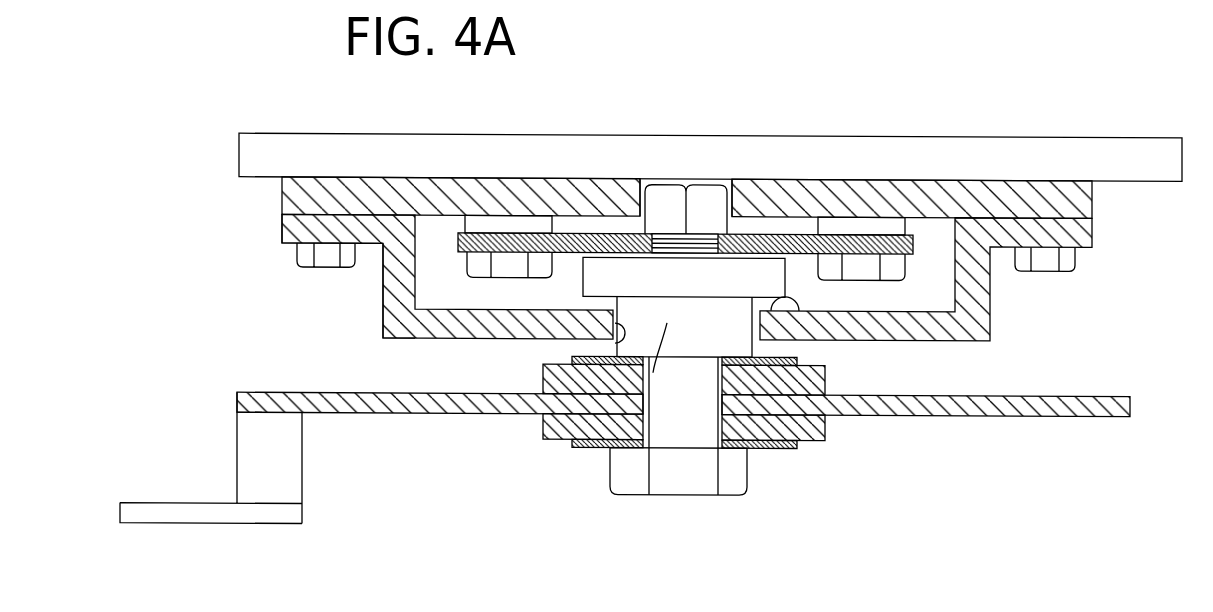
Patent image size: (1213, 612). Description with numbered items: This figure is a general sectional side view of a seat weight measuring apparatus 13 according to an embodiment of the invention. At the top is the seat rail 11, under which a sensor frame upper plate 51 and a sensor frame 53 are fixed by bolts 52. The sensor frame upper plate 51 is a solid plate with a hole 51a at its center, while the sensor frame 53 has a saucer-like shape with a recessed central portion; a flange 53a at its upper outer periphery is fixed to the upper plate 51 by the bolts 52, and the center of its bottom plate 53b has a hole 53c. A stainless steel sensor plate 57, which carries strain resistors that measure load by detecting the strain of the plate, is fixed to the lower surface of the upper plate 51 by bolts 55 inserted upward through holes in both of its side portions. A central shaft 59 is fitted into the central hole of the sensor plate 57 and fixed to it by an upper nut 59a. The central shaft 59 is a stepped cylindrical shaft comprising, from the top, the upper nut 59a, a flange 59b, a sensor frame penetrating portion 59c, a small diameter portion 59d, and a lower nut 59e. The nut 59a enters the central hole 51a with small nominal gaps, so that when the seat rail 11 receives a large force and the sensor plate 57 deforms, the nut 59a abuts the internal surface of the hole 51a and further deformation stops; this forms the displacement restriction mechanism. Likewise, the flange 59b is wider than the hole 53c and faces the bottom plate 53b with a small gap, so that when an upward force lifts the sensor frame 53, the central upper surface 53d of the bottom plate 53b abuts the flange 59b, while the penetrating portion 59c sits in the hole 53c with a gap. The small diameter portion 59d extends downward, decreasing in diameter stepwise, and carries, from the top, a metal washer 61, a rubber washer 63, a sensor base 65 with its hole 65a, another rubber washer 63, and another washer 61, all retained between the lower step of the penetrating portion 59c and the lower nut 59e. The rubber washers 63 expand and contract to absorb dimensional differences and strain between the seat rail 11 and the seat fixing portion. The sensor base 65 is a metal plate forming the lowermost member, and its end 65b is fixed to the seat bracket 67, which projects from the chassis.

The seat rail 11 is at (310, 150).
The mounting assembly 13 is at (230, 188).
The sensor frame upper plate 51 is at (302, 194).
The hole 51a is at (677, 185).
The bolts 52 is at (330, 258).
The sensor frame 53 is at (383, 281).
The flange 53a is at (290, 224).
The bottom plate 53b is at (398, 340).
The hole 53c is at (605, 342).
The central upper surface 53d is at (800, 311).
The bolts 55 is at (497, 272).
The sensor plate 57 is at (573, 252).
The central shaft 59 is at (571, 445).
The upper nut 59a is at (707, 194).
The flange 59b is at (757, 268).
The sensor frame penetrating portion 59c is at (727, 319).
The small diameter portion 59d is at (685, 410).
The lower nut 59e is at (630, 472).
The washer 61 is at (800, 433).
The rubber washer 63 is at (800, 358).
The sensor base 65 is at (890, 412).
The hole 65a is at (715, 408).
The end 65b is at (263, 391).
The seat bracket 67 is at (252, 454).